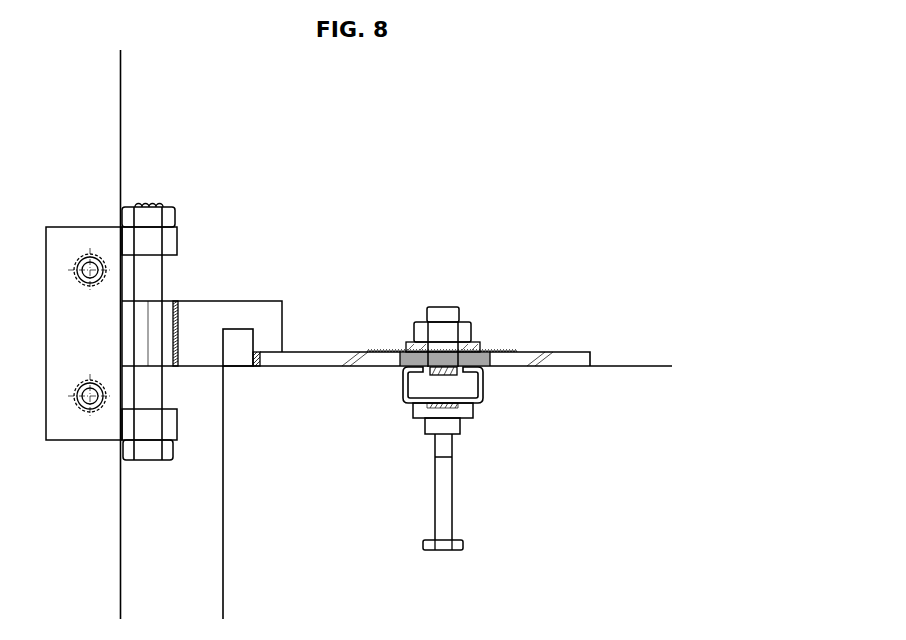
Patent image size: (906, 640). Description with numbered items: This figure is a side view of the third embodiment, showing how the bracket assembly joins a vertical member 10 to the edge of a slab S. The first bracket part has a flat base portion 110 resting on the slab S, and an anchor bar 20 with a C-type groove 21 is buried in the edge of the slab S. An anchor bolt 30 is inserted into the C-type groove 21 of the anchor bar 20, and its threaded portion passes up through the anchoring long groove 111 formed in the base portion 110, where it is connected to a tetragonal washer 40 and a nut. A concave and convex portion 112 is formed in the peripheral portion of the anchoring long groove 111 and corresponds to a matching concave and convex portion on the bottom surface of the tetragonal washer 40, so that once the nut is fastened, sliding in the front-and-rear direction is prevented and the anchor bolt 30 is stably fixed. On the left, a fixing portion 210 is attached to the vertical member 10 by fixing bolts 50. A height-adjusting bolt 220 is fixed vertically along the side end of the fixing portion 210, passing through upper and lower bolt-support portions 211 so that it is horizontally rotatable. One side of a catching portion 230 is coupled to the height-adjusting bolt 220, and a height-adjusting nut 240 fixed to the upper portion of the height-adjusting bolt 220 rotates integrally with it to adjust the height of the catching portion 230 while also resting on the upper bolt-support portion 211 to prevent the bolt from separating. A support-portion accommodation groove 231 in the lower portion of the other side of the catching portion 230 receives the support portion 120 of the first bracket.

The vertical member 10 is at (102, 108).
The fixing portion 210 is at (72, 234).
The bolt-support portion 211 is at (176, 241).
The height-adjusting bolt 220 is at (154, 273).
The height-adjusting nut 240 is at (170, 207).
The catching portion 230 is at (208, 314).
The support-portion accommodation groove 231 is at (244, 328).
The support portion 120 is at (243, 353).
The base portion 110 is at (333, 360).
The anchoring long groove 111 is at (490, 360).
The concave and convex portion 112 is at (510, 350).
The anchor bolt 30 is at (447, 315).
The tetragonal washer 40 is at (482, 338).
The anchor bar 20 is at (483, 400).
The C-type groove 21 is at (444, 376).
The fixing bolt 50 is at (88, 402).
The slab S is at (243, 558).